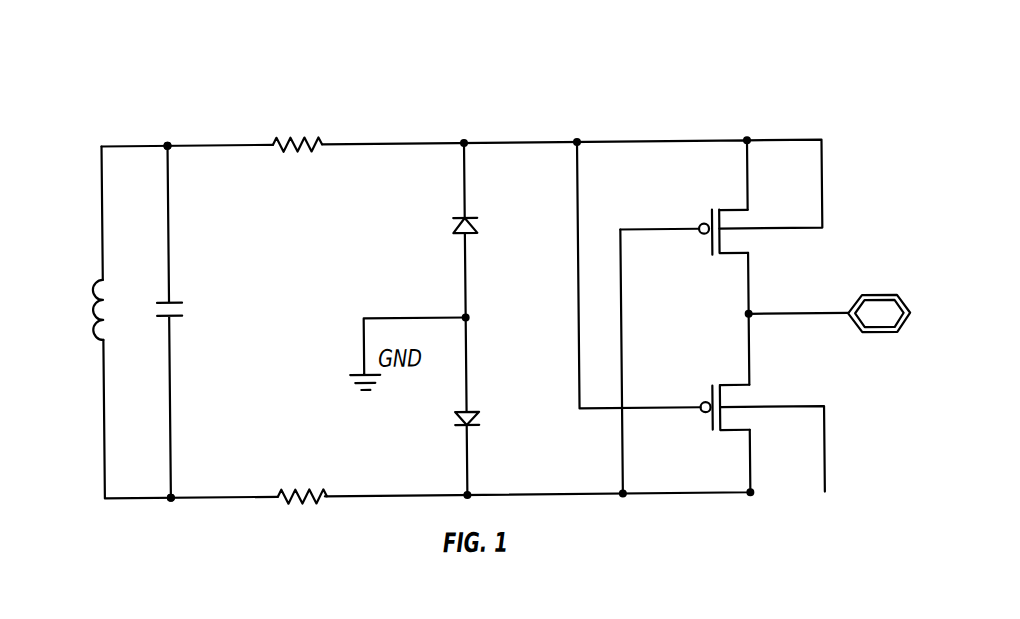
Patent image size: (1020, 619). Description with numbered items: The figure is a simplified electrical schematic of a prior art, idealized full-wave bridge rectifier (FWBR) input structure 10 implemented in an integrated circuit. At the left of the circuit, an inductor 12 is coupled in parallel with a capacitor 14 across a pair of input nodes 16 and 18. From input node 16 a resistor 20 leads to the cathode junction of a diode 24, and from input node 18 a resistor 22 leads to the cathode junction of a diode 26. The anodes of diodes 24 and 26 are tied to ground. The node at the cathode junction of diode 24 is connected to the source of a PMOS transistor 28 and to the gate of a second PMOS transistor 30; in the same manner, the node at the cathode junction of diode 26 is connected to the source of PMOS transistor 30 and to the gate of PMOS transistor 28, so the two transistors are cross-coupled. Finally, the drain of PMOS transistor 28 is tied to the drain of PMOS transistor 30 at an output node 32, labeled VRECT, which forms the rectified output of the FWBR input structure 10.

The FWBR input structure 10 is at (752, 85).
The inductor 12 is at (98, 276).
The capacitor 14 is at (174, 299).
The input node 16 is at (168, 143).
The input node 18 is at (168, 495).
The resistor 20 is at (310, 142).
The resistor 22 is at (275, 493).
The diode 24 is at (472, 226).
The diode 26 is at (466, 413).
The PMOS transistor 28 is at (720, 224).
The PMOS transistor 30 is at (718, 404).
The output node 32 is at (886, 336).